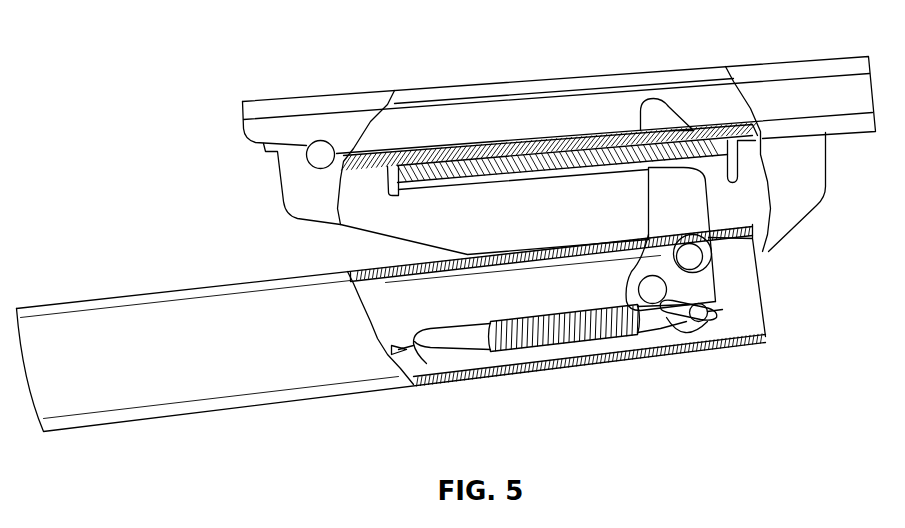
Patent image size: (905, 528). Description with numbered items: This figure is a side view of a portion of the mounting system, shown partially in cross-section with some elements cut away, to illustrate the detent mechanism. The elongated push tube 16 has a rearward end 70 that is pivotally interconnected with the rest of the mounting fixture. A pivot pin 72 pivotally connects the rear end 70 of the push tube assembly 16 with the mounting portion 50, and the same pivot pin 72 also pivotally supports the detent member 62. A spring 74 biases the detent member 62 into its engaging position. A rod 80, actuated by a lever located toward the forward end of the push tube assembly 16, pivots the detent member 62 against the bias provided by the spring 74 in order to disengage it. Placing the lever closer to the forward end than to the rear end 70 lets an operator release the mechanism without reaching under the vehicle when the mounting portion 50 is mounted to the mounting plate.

The elongated push tube 16 is at (323, 396).
The mounting portion 50 is at (825, 178).
The detent member 62 is at (652, 95).
The rearward end 70 is at (768, 337).
The pivot pin 72 is at (697, 257).
The spring 74 is at (613, 353).
The rod 80 is at (465, 342).